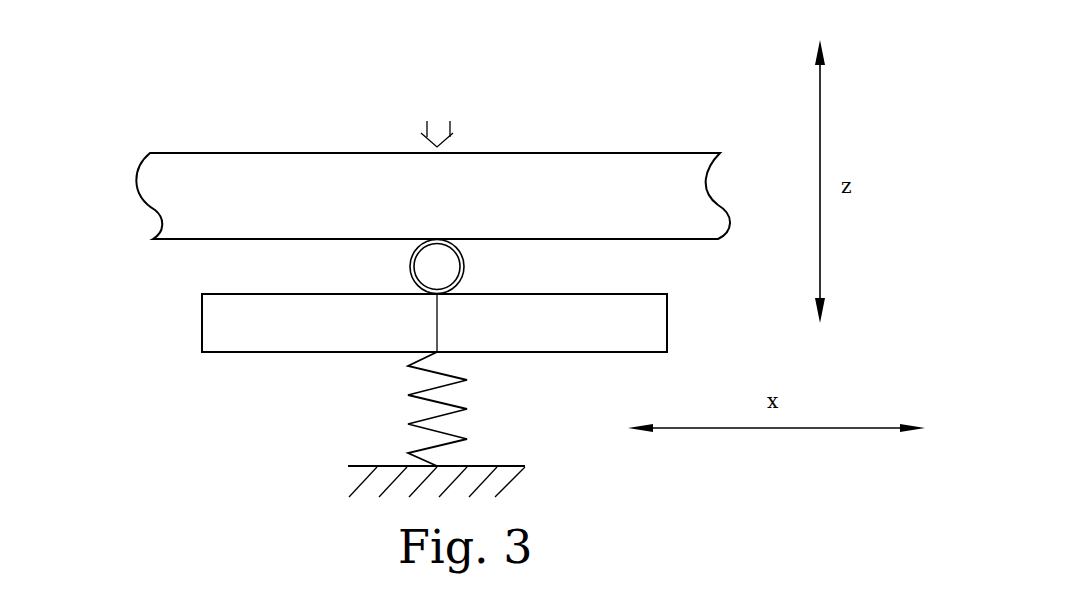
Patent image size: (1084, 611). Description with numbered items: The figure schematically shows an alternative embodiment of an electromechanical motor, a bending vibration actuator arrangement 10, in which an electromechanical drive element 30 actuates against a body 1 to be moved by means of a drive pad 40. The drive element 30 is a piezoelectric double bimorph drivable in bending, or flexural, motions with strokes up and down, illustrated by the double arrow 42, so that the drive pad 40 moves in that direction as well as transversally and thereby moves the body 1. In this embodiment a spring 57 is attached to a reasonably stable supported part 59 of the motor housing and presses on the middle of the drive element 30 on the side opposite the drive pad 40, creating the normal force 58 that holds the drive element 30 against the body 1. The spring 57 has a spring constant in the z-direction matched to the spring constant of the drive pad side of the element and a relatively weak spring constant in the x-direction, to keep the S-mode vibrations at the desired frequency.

The double multimorph bending vibration actuator arrangement 10 is at (240, 103).
The body 1 is at (635, 173).
The normal force 58 is at (459, 131).
The drive pad 40 is at (465, 272).
The direction of bending motion 42 is at (377, 258).
The electromechanical drive element 30 is at (667, 297).
The spring 57 is at (467, 408).
The stable supported part 59 is at (498, 467).